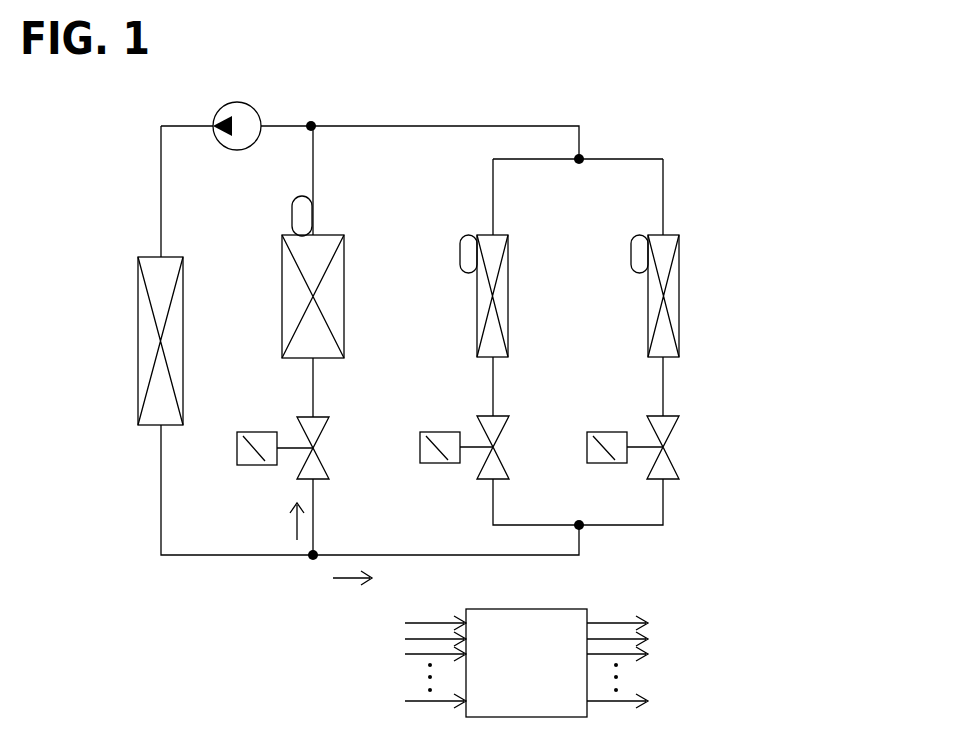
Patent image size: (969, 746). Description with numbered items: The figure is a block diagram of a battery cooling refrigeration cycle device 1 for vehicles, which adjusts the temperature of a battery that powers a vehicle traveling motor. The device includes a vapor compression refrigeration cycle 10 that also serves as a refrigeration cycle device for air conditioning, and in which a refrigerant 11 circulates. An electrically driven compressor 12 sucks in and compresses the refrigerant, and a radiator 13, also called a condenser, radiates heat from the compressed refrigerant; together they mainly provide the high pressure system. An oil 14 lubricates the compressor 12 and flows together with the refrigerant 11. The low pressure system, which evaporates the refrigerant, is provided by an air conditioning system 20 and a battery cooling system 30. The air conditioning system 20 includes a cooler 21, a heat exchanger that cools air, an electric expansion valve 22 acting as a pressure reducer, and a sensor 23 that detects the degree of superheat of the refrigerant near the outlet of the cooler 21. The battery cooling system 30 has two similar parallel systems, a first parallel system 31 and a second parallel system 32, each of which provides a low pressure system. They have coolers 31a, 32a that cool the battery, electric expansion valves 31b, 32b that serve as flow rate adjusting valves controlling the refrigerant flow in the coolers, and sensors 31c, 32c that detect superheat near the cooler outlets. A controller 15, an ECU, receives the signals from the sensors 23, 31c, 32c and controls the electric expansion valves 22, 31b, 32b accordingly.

The refrigeration cycle device 1 is at (848, 118).
The refrigeration cycle 10 is at (636, 116).
The refrigerant 11 is at (353, 126).
The compressor 12 is at (262, 109).
The radiator 13 is at (172, 257).
The oil 14 is at (161, 530).
The controller 15 is at (580, 609).
The air conditioning system 20 is at (342, 178).
The cooler 21 is at (330, 235).
The electric expansion valve 22 is at (298, 473).
The sensor 23 is at (296, 203).
The battery cooling system 30 is at (732, 144).
The first parallel system 31 is at (474, 224).
The cooler 31a is at (496, 235).
The electric expansion valve 31b is at (485, 470).
The sensor 31c is at (462, 272).
The second parallel system 32 is at (646, 224).
The cooler 32a is at (667, 235).
The electric expansion valve 32b is at (655, 470).
The sensor 32c is at (633, 272).